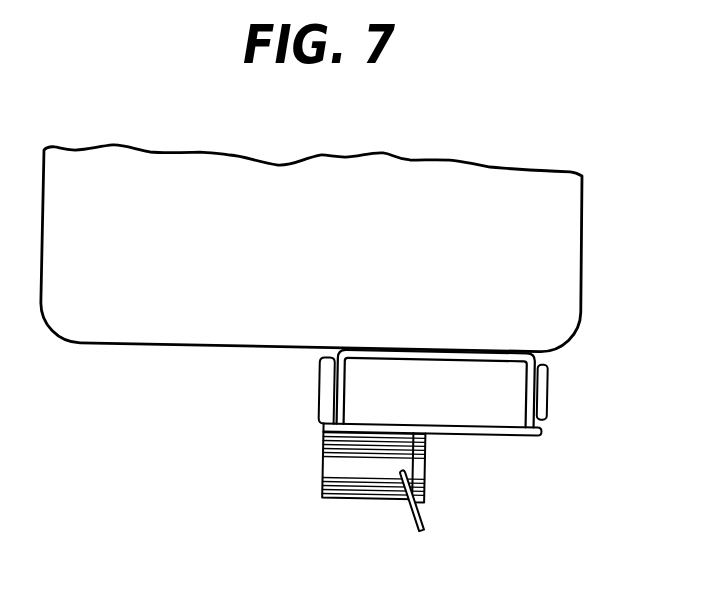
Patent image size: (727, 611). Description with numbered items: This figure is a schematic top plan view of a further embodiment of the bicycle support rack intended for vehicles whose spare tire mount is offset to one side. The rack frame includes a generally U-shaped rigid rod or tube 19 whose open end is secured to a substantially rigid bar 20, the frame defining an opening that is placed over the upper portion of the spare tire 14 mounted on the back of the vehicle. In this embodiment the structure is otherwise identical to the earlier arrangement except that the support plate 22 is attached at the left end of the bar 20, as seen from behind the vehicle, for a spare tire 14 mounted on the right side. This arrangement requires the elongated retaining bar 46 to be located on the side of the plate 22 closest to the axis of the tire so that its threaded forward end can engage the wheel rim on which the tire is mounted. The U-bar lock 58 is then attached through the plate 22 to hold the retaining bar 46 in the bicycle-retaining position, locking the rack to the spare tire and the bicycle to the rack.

The spare tire 14 is at (549, 376).
The U-shaped rigid rod or tube 19 is at (534, 349).
The rigid bar 20 is at (532, 434).
The support plate 22 is at (326, 472).
The retaining bar 46 is at (427, 470).
The U-bar lock 58 is at (426, 526).